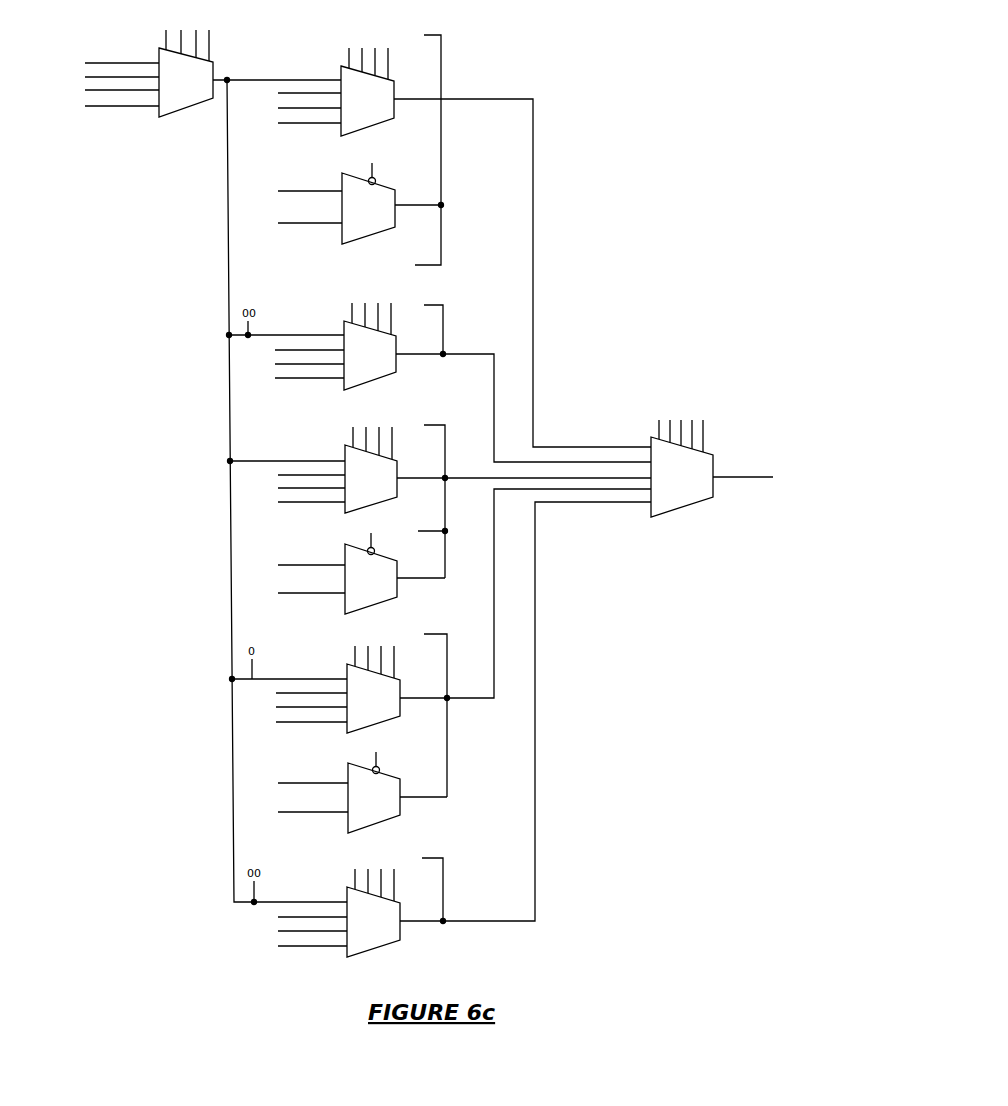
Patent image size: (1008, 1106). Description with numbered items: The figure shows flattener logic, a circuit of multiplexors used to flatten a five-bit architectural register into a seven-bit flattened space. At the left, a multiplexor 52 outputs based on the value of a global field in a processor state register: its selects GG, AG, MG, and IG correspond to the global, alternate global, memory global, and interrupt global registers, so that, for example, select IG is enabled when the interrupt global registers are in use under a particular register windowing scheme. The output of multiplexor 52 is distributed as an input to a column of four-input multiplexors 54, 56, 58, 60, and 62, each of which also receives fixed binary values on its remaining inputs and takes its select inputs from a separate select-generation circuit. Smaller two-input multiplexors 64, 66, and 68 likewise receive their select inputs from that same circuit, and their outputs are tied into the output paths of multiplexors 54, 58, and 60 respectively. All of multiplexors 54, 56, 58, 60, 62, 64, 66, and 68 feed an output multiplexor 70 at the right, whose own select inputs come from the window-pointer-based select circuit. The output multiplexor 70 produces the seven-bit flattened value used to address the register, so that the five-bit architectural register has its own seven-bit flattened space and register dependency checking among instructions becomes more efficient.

The multiplexor 52 is at (181, 110).
The multiplexor 54 is at (384, 124).
The multiplexor 56 is at (386, 378).
The multiplexor 58 is at (386, 501).
The multiplexor 60 is at (388, 721).
The multiplexor 62 is at (386, 944).
The multiplexor 64 is at (383, 231).
The multiplexor 66 is at (384, 602).
The multiplexor 68 is at (386, 820).
The output multiplexor 70 is at (698, 502).